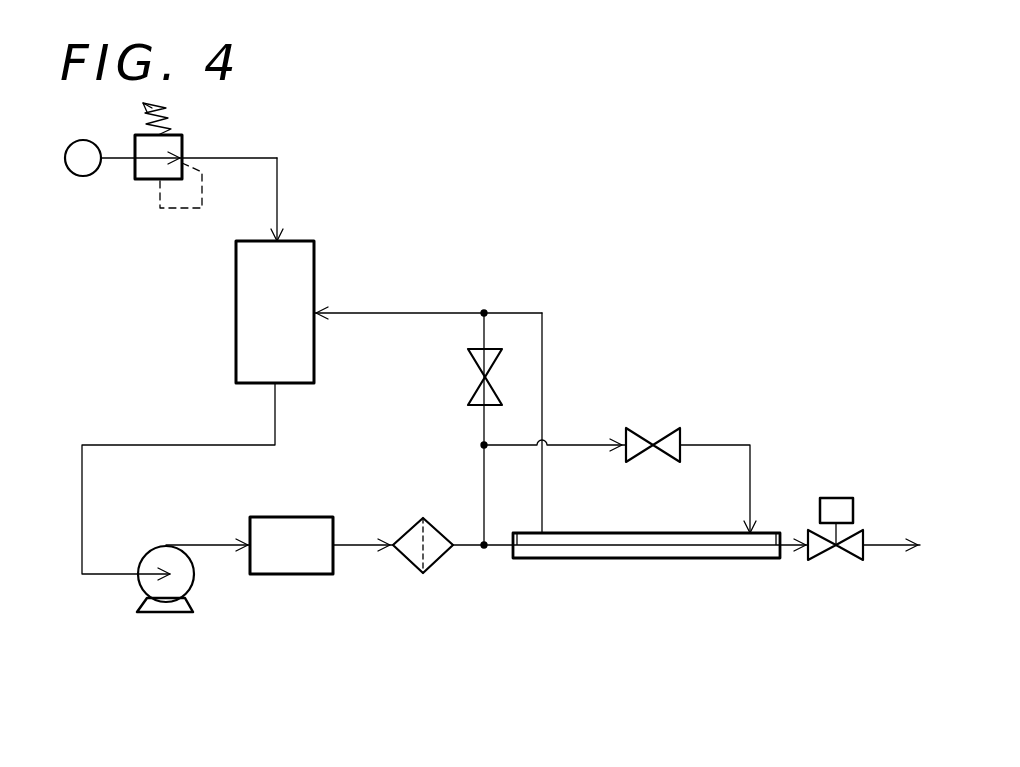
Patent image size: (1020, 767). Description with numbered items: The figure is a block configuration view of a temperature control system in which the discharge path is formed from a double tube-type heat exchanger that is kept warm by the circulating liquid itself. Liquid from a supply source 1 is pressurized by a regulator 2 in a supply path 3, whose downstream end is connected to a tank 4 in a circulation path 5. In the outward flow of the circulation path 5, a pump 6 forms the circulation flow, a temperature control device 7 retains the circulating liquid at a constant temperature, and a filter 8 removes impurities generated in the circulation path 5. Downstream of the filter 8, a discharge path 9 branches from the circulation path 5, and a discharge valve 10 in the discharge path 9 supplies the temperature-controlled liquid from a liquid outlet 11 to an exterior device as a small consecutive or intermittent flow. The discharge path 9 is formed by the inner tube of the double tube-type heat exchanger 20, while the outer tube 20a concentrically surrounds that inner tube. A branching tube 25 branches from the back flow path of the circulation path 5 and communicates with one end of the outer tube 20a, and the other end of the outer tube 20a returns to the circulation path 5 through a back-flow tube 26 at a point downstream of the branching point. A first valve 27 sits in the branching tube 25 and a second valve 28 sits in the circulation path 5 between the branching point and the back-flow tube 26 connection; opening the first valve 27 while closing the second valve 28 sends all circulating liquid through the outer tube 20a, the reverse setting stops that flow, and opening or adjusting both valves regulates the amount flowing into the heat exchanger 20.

The supply source 1 is at (83, 168).
The regulator 2 is at (147, 172).
The supply path 3 is at (225, 158).
The tank 4 is at (305, 265).
The circulation path 5 is at (400, 313).
The pump 6 is at (178, 612).
The temperature control device 7 is at (297, 565).
The filter 8 is at (420, 568).
The discharge path 9 is at (503, 548).
The discharge valve 10 is at (855, 550).
The liquid outlet 11 is at (885, 550).
The double tube-type heat exchanger 20 is at (712, 555).
The outer tube 20a is at (600, 550).
The branching tube 25 is at (717, 445).
The back-flow tube 26 is at (543, 368).
The first valve 27 is at (663, 455).
The second valve 28 is at (473, 365).